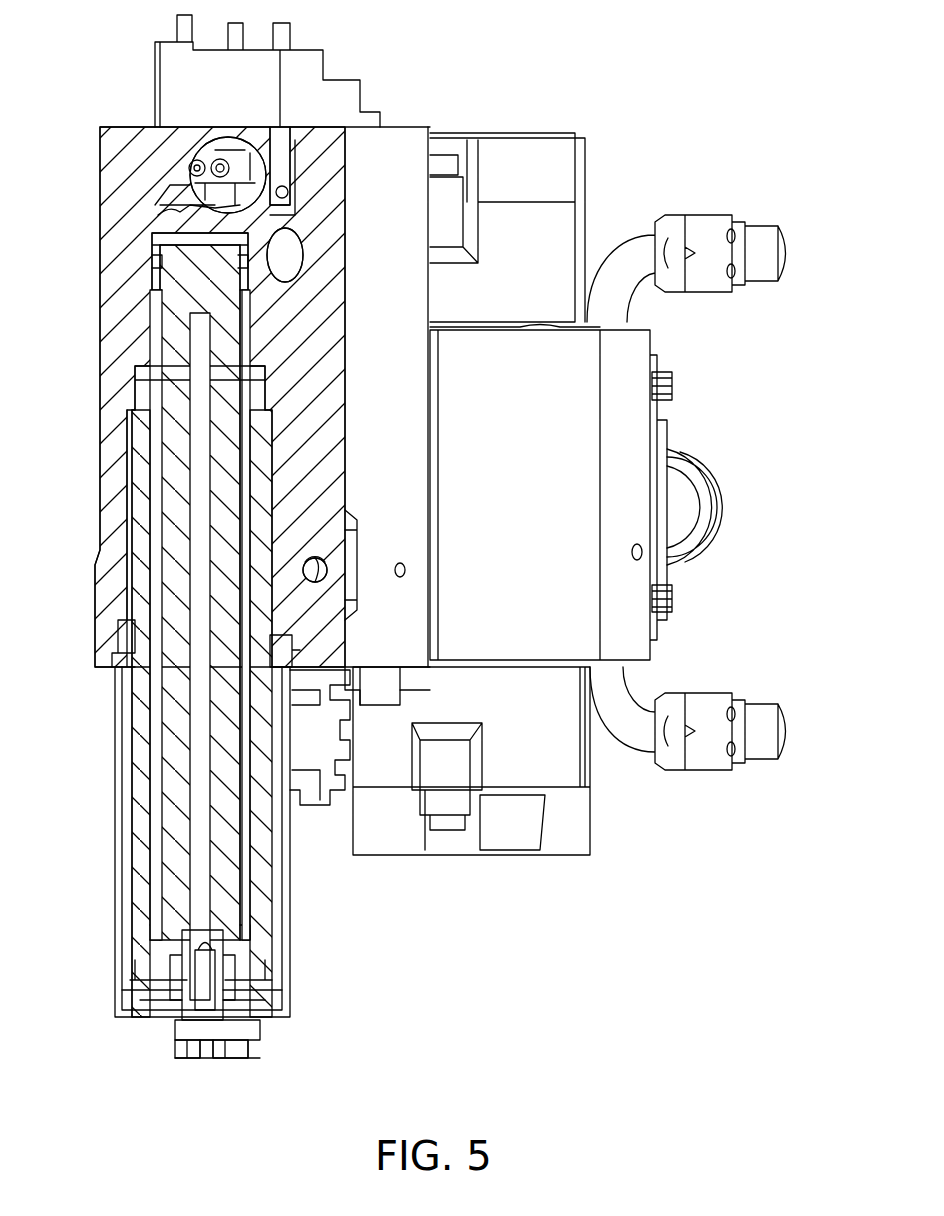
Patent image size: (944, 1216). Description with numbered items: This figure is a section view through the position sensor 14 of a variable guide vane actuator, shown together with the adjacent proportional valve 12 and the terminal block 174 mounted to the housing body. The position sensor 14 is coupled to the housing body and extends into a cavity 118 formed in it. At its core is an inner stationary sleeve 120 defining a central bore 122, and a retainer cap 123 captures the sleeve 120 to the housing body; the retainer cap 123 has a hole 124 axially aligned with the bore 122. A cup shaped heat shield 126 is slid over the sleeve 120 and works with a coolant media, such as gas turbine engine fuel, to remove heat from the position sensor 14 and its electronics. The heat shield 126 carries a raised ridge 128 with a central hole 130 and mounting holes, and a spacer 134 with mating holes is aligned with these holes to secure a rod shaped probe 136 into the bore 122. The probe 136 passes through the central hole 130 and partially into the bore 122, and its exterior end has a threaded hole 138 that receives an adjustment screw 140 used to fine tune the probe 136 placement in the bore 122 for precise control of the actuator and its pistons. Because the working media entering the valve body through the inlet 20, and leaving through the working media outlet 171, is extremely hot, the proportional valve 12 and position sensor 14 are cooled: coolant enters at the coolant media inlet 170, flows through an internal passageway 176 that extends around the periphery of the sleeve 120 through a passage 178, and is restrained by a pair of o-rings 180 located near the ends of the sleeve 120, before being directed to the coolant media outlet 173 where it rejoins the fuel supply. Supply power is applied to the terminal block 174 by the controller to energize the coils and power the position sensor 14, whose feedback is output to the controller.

The proportional valve 12 is at (592, 768).
The position sensor 14 is at (296, 968).
The inlet 20 is at (778, 235).
The cavity 118 is at (118, 668).
The inner stationary sleeve 120 is at (148, 318).
The central bore 122 is at (178, 292).
The retainer cap 123 is at (183, 1000).
The hole 124 is at (185, 978).
The heat shield 126 is at (115, 798).
The raised ridge 128 is at (230, 1025).
The central hole 130 is at (212, 1060).
The spacer 134 is at (178, 1057).
The probe 136 is at (185, 607).
The threaded hole 138 is at (185, 1015).
The adjustment screw 140 is at (197, 1062).
The coolant media inlet 170 is at (735, 500).
The working media outlet 171 is at (787, 760).
The coolant media outlet 173 is at (310, 810).
The terminal block 174 is at (160, 42).
The internal passageway 176 is at (150, 352).
The passage 178 is at (270, 525).
The o-rings 180 is at (155, 253).